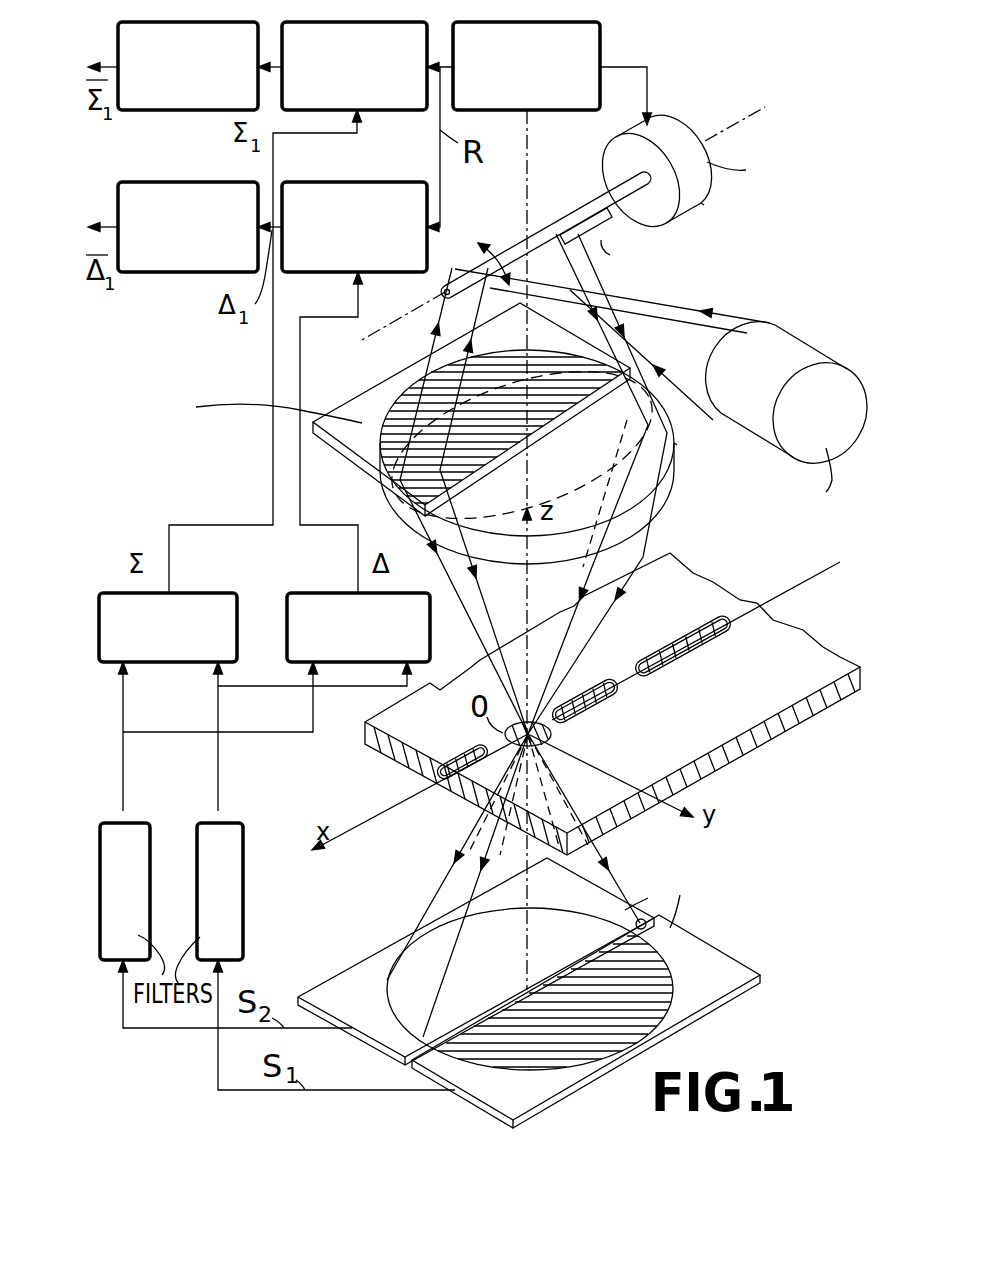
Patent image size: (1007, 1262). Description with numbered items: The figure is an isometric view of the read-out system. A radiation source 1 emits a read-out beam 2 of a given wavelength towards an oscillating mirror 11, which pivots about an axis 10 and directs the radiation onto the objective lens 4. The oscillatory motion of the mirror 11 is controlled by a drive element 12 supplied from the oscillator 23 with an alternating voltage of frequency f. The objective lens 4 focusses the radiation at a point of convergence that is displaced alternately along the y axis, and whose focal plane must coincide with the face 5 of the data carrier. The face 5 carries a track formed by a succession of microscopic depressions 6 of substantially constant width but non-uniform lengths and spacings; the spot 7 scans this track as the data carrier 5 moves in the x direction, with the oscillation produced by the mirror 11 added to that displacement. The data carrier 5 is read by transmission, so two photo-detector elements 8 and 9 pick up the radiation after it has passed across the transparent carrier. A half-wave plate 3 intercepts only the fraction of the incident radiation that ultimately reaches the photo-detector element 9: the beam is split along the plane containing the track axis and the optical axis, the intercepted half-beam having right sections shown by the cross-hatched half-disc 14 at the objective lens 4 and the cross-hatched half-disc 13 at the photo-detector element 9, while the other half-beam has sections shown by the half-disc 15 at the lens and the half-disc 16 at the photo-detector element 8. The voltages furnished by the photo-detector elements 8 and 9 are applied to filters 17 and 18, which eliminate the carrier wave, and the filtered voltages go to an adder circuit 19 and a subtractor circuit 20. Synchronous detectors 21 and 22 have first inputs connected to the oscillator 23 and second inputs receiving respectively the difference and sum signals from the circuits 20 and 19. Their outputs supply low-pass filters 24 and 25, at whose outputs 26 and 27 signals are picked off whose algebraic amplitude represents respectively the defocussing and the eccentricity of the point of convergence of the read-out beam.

The radiation source 1 is at (800, 340).
The read-out beam 2 is at (678, 312).
The half-wave plate 3 is at (365, 388).
The objective lens 4 is at (672, 490).
The data carrier 5 is at (717, 583).
The microscopic depressions 6 is at (468, 756).
The spot 7 is at (551, 736).
The photo-detector element 8 is at (352, 962).
The photo-detector element 9 is at (728, 932).
The axis 10 is at (716, 140).
The oscillating mirror 11 is at (533, 245).
The drive element 12 is at (708, 197).
The cross-hatched half-disc 13 is at (673, 968).
The cross-hatched half-disc 14 is at (405, 495).
The half-disc 15 is at (672, 460).
The half-disc 16 is at (387, 977).
The filter 17 is at (123, 823).
The filter 18 is at (217, 823).
The adder circuit 19 is at (220, 593).
The subtractor circuit 20 is at (328, 593).
The synchronous detector 21 is at (308, 182).
The synchronous detector 22 is at (385, 110).
The oscillator 23 is at (600, 50).
The low-pass filter 24 is at (190, 182).
The low-pass filter 25 is at (172, 110).
The output 26 is at (103, 47).
The output 27 is at (103, 205).